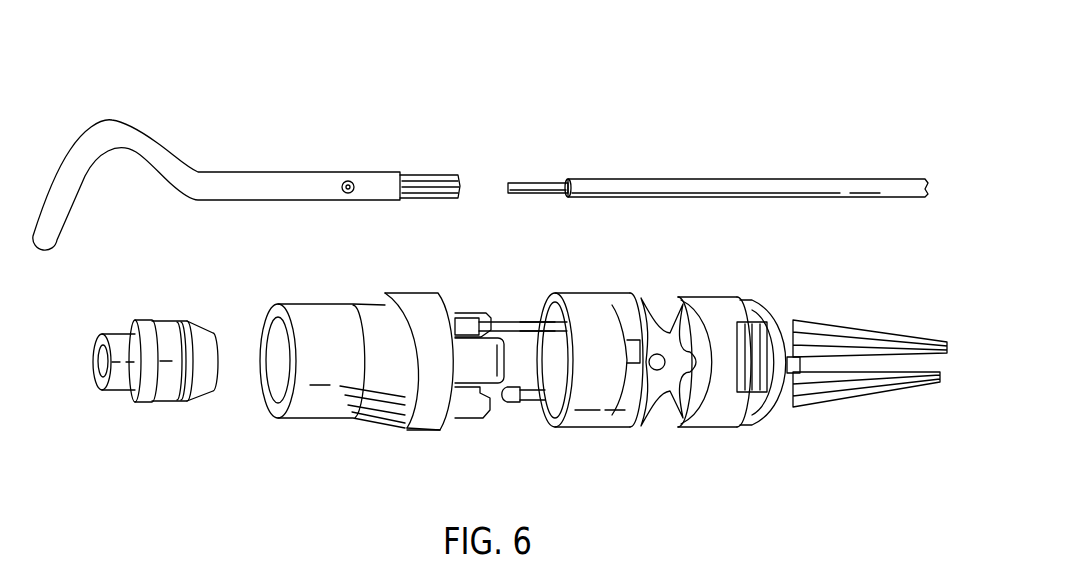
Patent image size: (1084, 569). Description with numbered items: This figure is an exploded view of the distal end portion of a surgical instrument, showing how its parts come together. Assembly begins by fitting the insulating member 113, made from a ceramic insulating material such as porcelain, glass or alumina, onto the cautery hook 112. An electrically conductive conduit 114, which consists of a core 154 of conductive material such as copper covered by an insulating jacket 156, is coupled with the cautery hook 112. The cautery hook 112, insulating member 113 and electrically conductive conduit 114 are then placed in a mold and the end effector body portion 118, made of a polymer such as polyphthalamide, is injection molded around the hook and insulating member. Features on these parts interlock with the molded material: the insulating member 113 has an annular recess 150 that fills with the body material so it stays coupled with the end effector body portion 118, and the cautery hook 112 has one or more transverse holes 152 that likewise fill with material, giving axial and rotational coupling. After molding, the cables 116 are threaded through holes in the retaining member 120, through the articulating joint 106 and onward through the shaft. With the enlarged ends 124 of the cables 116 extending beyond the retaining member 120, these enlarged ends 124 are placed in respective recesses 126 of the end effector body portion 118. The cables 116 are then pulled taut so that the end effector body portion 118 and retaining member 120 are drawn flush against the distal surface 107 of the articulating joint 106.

The articulating joint 106 is at (772, 327).
The distal surface 107 is at (617, 330).
The cautery hook 112 is at (246, 185).
The insulating member 113 is at (152, 403).
The electrically conductive conduit 114 is at (718, 98).
The cables 116 is at (512, 325).
The end effector body portion 118 is at (335, 405).
The retaining member 120 is at (578, 303).
The enlarged ends 124 is at (463, 327).
The recesses 126 is at (467, 403).
The annular recess 150 is at (155, 368).
The transverse holes 152 is at (349, 181).
The core 154 is at (532, 183).
The insulating jacket 156 is at (593, 180).